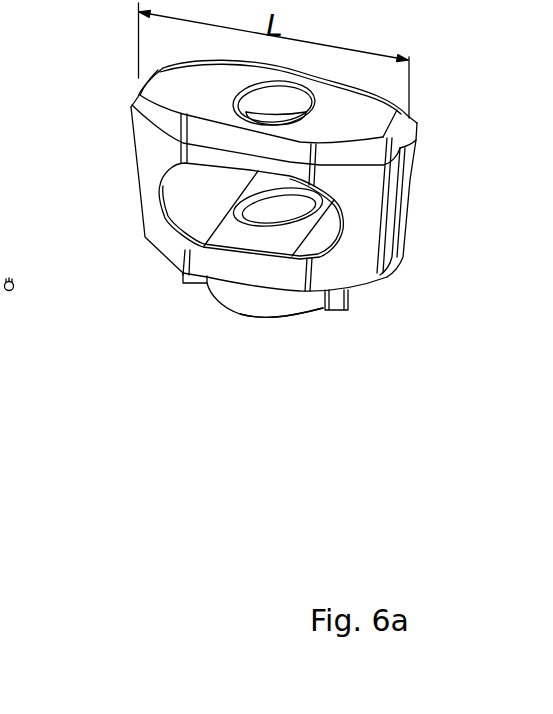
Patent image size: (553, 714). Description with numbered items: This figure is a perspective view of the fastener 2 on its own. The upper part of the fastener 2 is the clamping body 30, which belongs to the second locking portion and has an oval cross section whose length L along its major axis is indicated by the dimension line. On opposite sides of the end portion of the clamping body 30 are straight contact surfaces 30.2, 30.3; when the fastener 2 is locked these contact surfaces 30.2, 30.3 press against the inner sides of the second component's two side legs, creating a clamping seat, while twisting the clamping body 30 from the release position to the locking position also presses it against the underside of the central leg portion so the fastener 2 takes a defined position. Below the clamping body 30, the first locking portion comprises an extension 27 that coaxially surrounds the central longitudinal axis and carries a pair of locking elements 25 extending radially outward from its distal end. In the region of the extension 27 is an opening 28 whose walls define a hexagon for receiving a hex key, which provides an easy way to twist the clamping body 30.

The fastener 2 is at (360, 270).
The clamping body 30 is at (424, 226).
The contact surface 30.2 is at (122, 87).
The contact surface 30.3 is at (424, 148).
The locking element 25 is at (183, 276).
The extension 27 is at (233, 303).
The opening 28 is at (288, 321).